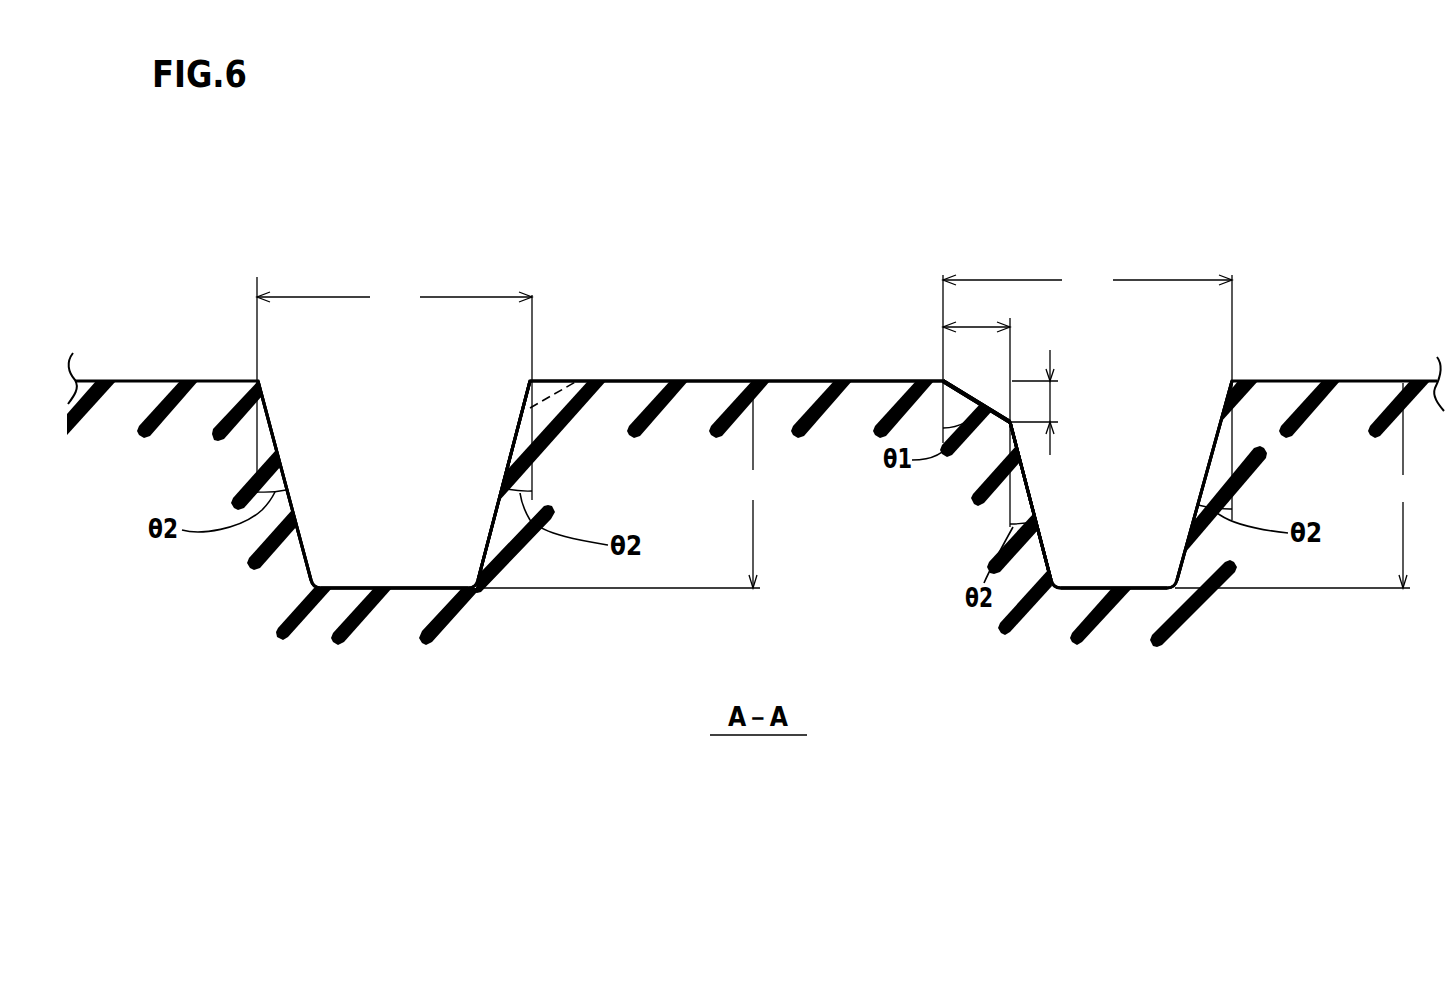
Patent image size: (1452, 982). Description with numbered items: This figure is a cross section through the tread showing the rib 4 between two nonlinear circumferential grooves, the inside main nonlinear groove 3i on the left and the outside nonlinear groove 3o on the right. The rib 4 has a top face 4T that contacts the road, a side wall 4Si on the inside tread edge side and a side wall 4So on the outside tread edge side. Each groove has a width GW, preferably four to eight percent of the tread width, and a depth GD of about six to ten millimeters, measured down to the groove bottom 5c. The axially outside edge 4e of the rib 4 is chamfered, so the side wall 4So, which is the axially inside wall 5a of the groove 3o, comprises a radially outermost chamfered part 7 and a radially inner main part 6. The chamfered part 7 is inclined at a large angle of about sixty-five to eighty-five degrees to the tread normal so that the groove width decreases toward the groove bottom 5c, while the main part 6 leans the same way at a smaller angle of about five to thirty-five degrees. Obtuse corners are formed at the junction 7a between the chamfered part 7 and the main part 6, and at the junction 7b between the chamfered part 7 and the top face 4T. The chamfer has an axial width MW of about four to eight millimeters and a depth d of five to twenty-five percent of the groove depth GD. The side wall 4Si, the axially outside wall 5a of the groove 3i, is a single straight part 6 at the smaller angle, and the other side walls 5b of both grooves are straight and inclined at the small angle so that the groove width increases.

The rib 4 is at (685, 417).
The top face 4T is at (813, 382).
The inside main nonlinear groove 3i is at (417, 487).
The outside nonlinear groove 3o is at (1135, 474).
The chamfered part 7 is at (548, 395).
The junction of chamfered part and top face 7b is at (943, 381).
The axially outside edge of the rib 4e is at (976, 401).
The junction of chamfered part and main part 7a is at (1011, 421).
The other side wall 5b is at (294, 466).
The main part 6 is at (1032, 459).
The groove bottom 5c is at (363, 573).
The side wall on inside tread edge side 4Si is at (486, 495).
The side wall on outside tread edge side 4So is at (953, 532).
The groove side wall 5a is at (764, 480).
The groove width GW is at (744, 290).
The width of the chamfered part MW is at (976, 314).
The groove depth GD is at (1080, 485).
The depth of the chamfered part d is at (1041, 402).